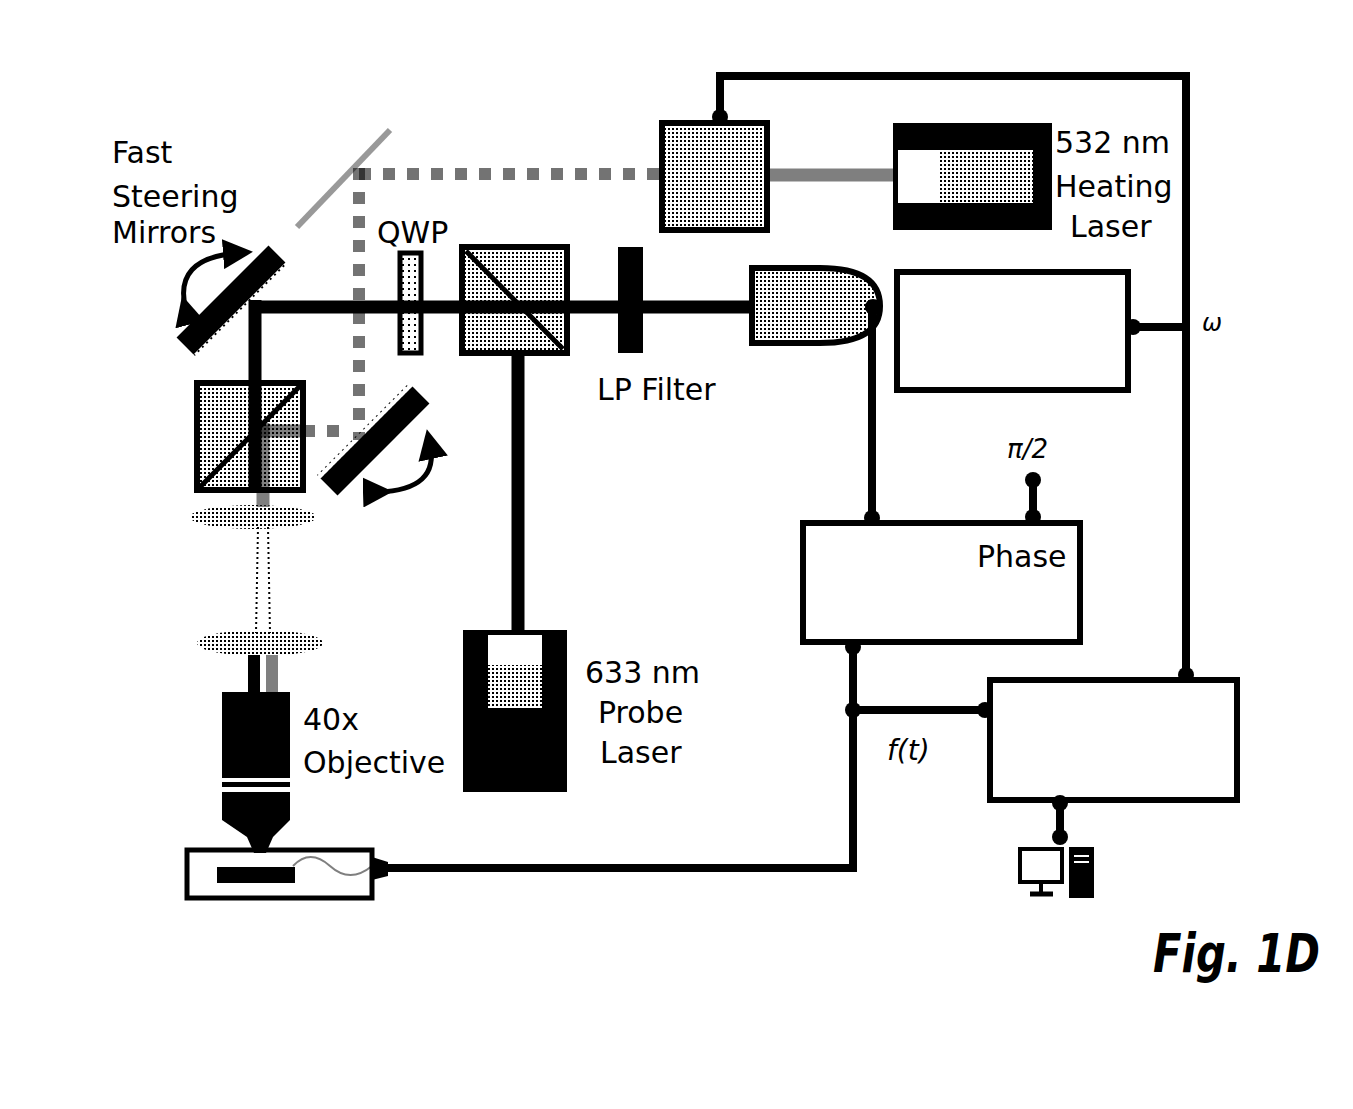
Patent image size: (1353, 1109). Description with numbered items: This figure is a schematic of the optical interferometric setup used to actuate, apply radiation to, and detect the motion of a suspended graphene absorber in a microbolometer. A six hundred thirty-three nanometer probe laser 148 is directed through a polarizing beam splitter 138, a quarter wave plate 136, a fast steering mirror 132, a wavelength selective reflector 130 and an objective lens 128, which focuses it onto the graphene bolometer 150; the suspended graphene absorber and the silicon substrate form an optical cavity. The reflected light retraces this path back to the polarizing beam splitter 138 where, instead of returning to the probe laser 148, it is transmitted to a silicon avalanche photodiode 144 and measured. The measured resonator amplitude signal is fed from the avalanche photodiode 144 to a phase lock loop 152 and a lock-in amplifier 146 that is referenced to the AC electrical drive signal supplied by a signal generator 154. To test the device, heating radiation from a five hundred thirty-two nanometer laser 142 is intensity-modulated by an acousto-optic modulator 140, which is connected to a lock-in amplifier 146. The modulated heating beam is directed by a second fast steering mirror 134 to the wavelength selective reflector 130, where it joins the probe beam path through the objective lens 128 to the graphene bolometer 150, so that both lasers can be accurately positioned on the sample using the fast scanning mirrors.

The objective lens 128 is at (222, 790).
The wavelength selective reflector 130 is at (193, 435).
The fast steering mirror 132 is at (182, 333).
The fast steering mirror 134 is at (340, 493).
The quarter wave plate 136 is at (420, 345).
The polarizing beam splitter 138 is at (541, 355).
The acousto-optic modulator 140 is at (660, 143).
The 532 nm laser 142 is at (893, 207).
The silicon avalanche photodiode 144 is at (773, 343).
The lock-in amplifier 146 is at (1157, 680).
The 633 nm probe laser 148 is at (503, 628).
The graphene bolometer 150 is at (273, 900).
The phase lock loop 152 is at (800, 593).
The signal generator 154 is at (1103, 392).